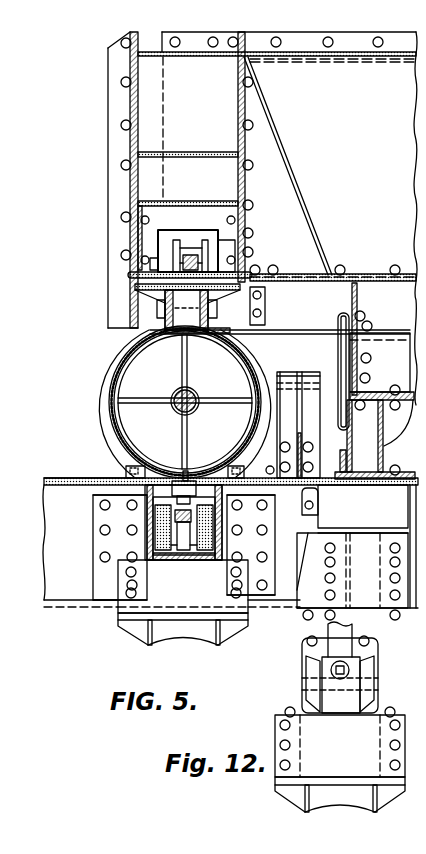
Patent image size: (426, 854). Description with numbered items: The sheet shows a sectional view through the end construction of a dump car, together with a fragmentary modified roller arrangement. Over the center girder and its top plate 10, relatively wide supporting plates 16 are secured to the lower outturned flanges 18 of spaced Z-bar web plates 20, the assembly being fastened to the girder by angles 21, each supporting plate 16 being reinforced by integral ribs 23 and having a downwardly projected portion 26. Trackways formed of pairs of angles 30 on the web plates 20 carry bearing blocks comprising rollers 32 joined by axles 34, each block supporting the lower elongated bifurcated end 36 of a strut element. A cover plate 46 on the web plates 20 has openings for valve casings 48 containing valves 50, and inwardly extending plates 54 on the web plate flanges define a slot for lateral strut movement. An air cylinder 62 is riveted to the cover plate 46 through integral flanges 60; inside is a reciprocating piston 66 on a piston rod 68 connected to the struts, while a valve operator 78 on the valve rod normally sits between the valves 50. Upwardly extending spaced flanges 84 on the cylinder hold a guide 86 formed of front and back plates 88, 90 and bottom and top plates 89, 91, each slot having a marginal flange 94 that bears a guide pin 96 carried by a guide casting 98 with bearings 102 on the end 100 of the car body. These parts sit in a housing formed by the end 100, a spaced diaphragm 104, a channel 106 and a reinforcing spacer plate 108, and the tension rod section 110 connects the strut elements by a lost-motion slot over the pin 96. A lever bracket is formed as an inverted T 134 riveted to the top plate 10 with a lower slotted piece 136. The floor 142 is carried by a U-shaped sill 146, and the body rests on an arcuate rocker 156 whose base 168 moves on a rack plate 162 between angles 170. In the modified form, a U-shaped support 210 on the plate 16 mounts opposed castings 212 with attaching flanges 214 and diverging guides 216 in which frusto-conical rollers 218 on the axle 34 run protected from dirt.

In FIG. 5, the top plate 10 is at (72, 481).
In FIG. 5, the supporting plate 16 is at (192, 638).
In FIG. 12, the supporting plate 16 is at (320, 782).
In FIG. 5, the lower outturned flange 18 is at (110, 560).
In FIG. 5, the web plate 20 is at (120, 530).
In FIG. 5, the angle 21 is at (100, 549).
In FIG. 5, the integral rib 23 is at (140, 640).
In FIG. 5, the downwardly projected portion 26 is at (120, 600).
In FIG. 5, the angle 30 is at (128, 510).
In FIG. 5, the roller 32 is at (148, 541).
In FIG. 5, the axle 34 is at (180, 525).
In FIG. 12, the axle 34 is at (341, 680).
In FIG. 5, the lower elongated bifurcated end 36 is at (280, 455).
In FIG. 5, the cover plate 46 is at (100, 476).
In FIG. 5, the valve casing 48 is at (192, 476).
In FIG. 5, the valve 50 is at (178, 482).
In FIG. 5, the inwardly extending plate 54 is at (393, 612).
In FIG. 12, the inwardly extending plate 54 is at (365, 635).
In FIG. 5, the integral flange 60 is at (120, 468).
In FIG. 5, the air cylinder 62 is at (128, 372).
In FIG. 5, the reciprocating piston 66 is at (142, 393).
In FIG. 5, the piston rod 68 is at (197, 392).
In FIG. 5, the valve operator 78 is at (186, 555).
In FIG. 5, the upwardly extending spaced flange 84 is at (158, 316).
In FIG. 5, the guide 86 is at (232, 238).
In FIG. 5, the front plate 88 is at (160, 264).
In FIG. 5, the bottom plate 89 is at (180, 330).
In FIG. 5, the back plate 90 is at (258, 232).
In FIG. 5, the top plate 91 is at (192, 248).
In FIG. 5, the marginal flange 94 is at (150, 272).
In FIG. 5, the guide pin 96 is at (150, 286).
In FIG. 5, the guide casting 98 is at (162, 206).
In FIG. 5, the end of the car body 100 is at (246, 192).
In FIG. 5, the bearing 102 is at (122, 255).
In FIG. 5, the diaphragm 104 is at (132, 62).
In FIG. 5, the channel 106 is at (208, 38).
In FIG. 5, the reinforcing spacer plate 108 is at (208, 153).
In FIG. 5, the tension rod section 110 is at (236, 205).
In FIG. 5, the inverted T 134 is at (355, 509).
In FIG. 5, the lower slotted piece 136 is at (246, 461).
In FIG. 5, the floor 142 is at (386, 268).
In FIG. 5, the U-shaped sill 146 is at (382, 341).
In FIG. 5, the rocker 156 is at (366, 448).
In FIG. 5, the rack plate 162 is at (390, 530).
In FIG. 5, the base 168 is at (350, 530).
In FIG. 5, the angle 170 is at (340, 462).
In FIG. 12, the U-shaped support 210 is at (343, 718).
In FIG. 12, the casting 212 is at (304, 652).
In FIG. 12, the attaching flange 214 is at (306, 638).
In FIG. 12, the diverging guide 216 is at (308, 672).
In FIG. 12, the frusto-conical roller 218 is at (312, 684).